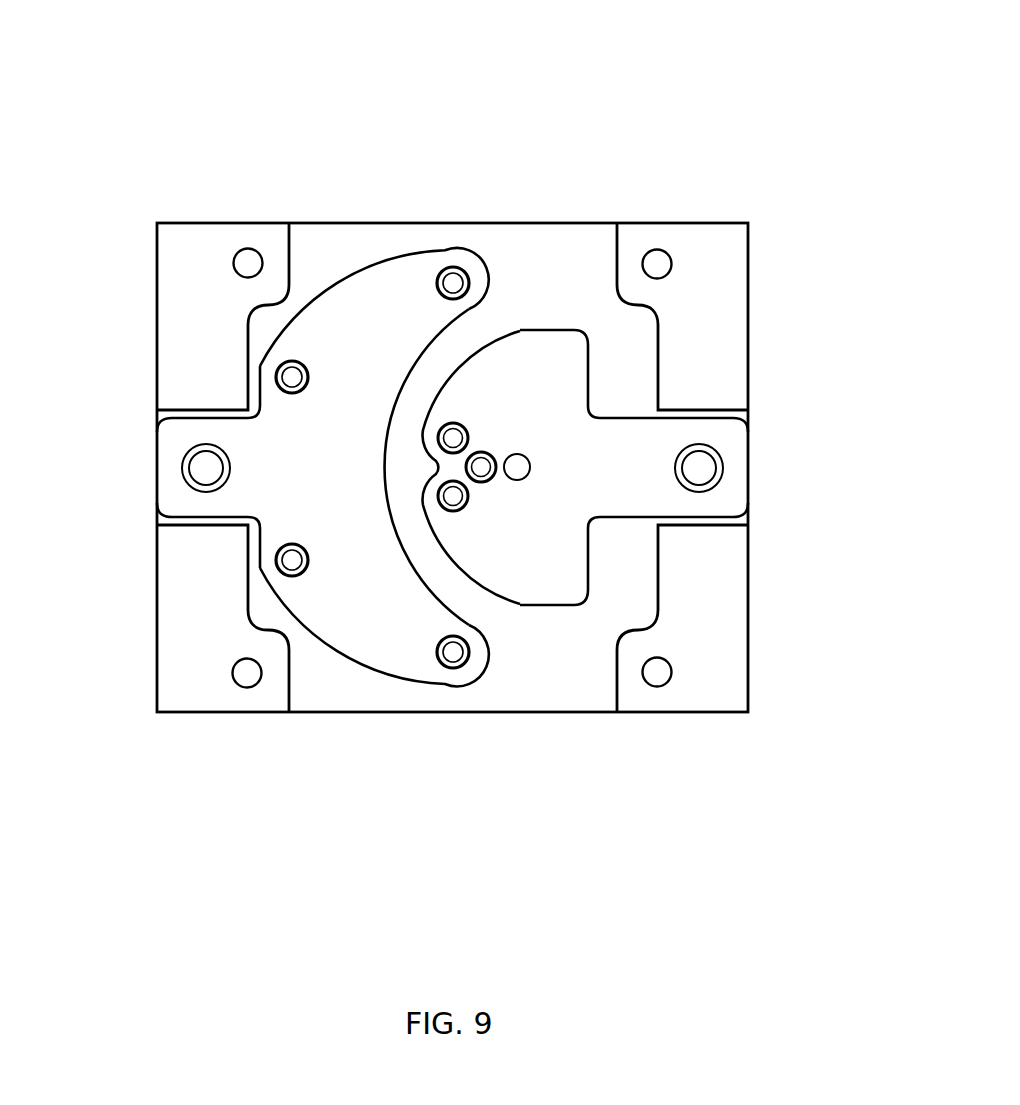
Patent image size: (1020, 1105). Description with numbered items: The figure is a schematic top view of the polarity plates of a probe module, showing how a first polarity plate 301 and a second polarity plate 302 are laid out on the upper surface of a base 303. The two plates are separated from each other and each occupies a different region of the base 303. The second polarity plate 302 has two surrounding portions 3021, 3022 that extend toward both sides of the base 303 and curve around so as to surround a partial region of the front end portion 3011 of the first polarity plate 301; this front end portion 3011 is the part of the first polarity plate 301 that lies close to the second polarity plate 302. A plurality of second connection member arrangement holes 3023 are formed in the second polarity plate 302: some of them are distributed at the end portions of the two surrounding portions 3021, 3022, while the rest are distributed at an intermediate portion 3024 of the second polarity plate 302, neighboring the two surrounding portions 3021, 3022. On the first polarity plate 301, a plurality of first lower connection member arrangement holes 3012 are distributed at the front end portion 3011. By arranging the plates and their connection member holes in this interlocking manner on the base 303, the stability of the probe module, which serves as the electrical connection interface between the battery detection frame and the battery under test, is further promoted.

The first polarity plate 301 is at (733, 469).
The second polarity plate 302 is at (259, 461).
The base 303 is at (717, 300).
The front end portion 3011 is at (518, 412).
The first lower connection member arrangement holes 3012 is at (469, 437).
The surrounding portion 3021 is at (368, 320).
The surrounding portion 3022 is at (348, 592).
The second connection member arrangement holes 3023 is at (287, 361).
The intermediate portion 3024 is at (278, 472).